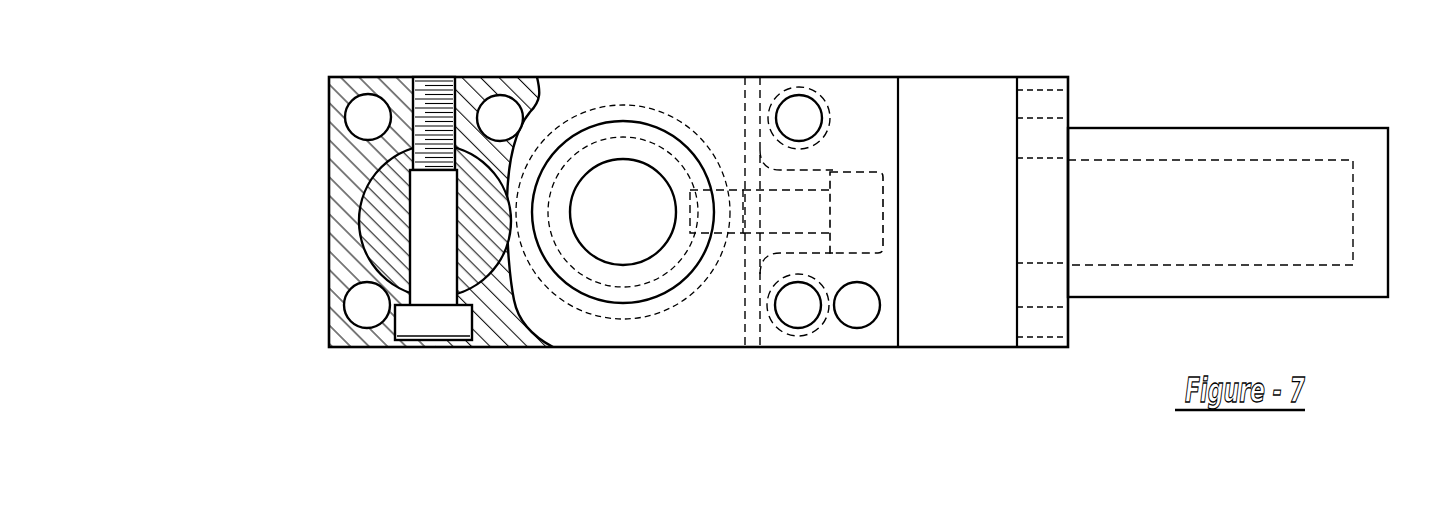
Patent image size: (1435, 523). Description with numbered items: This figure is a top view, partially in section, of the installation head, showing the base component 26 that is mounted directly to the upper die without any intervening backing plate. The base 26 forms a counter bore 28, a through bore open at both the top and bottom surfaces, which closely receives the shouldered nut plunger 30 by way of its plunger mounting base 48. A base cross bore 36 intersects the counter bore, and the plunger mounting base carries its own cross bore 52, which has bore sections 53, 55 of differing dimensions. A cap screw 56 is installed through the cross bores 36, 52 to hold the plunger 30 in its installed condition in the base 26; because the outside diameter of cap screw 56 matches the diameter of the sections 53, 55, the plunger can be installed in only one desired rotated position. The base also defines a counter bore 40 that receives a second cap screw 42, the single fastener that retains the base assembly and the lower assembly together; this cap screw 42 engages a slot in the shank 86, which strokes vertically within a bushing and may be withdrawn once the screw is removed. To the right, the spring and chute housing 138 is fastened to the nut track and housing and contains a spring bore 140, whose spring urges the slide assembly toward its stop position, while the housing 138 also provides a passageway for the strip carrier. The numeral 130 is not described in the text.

The fuel rail assembly 130 is at (253, 5).
The base component 26 is at (329, 152).
The counter bore 28 is at (379, 160).
The shouldered nut plunger 30 is at (363, 233).
The plunger mounting base 48 is at (375, 263).
The base cross bore 36 is at (423, 110).
The bore section 53 is at (452, 166).
The cross bore 52 is at (409, 240).
The cap screw 56 is at (452, 342).
The bore section 55 is at (553, 348).
The shank 86 is at (643, 162).
The cap screw 42 is at (850, 170).
The counter bore 40 is at (888, 172).
The spring and chute housing 138 is at (1211, 128).
The spring bore 140 is at (1222, 162).